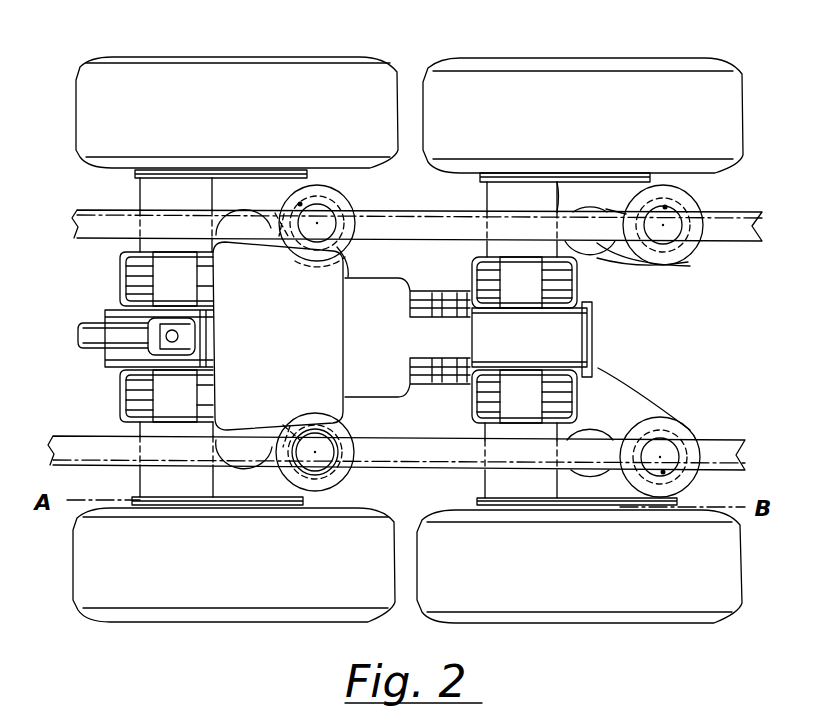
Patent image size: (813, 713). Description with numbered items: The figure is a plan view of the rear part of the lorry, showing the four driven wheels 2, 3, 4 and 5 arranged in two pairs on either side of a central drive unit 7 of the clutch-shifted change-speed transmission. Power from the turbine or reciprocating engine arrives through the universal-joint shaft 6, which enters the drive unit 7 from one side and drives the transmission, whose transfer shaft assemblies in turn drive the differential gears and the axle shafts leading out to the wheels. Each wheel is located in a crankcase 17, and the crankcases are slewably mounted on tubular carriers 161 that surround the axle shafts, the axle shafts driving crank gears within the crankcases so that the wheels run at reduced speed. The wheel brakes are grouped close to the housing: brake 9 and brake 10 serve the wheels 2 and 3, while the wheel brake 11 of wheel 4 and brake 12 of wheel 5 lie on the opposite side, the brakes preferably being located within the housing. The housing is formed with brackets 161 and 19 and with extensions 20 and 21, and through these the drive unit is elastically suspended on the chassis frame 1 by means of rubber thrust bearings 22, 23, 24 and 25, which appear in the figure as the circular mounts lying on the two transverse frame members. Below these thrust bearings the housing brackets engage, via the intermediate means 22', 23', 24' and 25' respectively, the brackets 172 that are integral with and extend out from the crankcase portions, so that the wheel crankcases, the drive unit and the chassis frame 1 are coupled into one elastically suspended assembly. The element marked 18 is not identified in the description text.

The chassis frame 1 is at (720, 448).
The driven wheel 2 is at (118, 88).
The driven wheel 3 is at (112, 590).
The driven wheel 4 is at (457, 97).
The driven wheel 5 is at (692, 582).
The universal-joint shaft 6 is at (97, 332).
The drive unit 7 is at (362, 297).
The brake 9 is at (147, 283).
The brake 10 is at (145, 393).
The wheel brake 11 is at (485, 283).
The brake 12 is at (483, 398).
The bracket 161 is at (613, 278).
The crankcase 17 is at (483, 203).
The bracket 172 is at (582, 192).
The link arm 18 is at (687, 262).
The bracket 19 is at (613, 402).
The extension 20 is at (300, 202).
The extension 21 is at (333, 477).
The rubber thrust bearing 22 is at (317, 139).
The intermediate means 22' is at (359, 194).
The rubber thrust bearing 23 is at (242, 556).
The intermediate means 23' is at (352, 463).
The rubber thrust bearing 24 is at (663, 138).
The intermediate means 24' is at (704, 189).
The rubber thrust bearing 25 is at (636, 560).
The intermediate means 25' is at (655, 518).